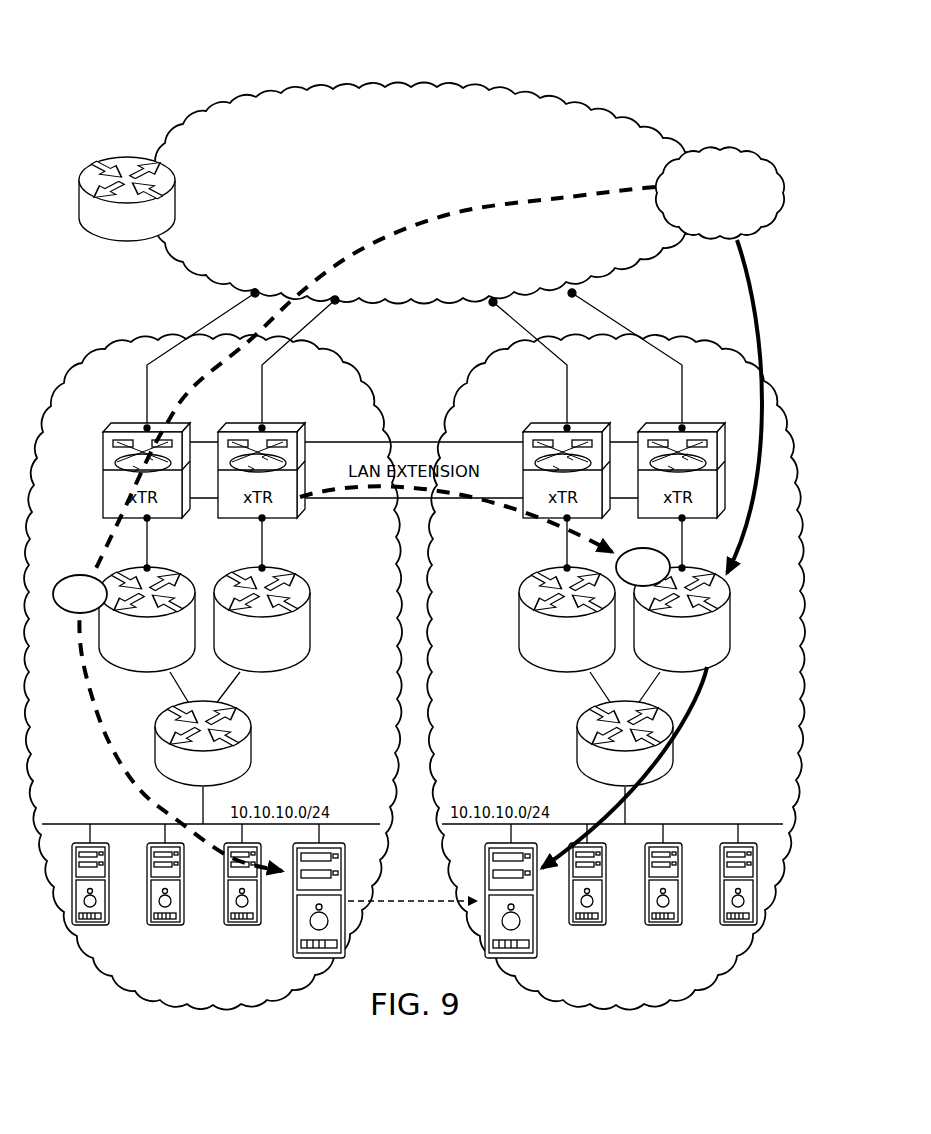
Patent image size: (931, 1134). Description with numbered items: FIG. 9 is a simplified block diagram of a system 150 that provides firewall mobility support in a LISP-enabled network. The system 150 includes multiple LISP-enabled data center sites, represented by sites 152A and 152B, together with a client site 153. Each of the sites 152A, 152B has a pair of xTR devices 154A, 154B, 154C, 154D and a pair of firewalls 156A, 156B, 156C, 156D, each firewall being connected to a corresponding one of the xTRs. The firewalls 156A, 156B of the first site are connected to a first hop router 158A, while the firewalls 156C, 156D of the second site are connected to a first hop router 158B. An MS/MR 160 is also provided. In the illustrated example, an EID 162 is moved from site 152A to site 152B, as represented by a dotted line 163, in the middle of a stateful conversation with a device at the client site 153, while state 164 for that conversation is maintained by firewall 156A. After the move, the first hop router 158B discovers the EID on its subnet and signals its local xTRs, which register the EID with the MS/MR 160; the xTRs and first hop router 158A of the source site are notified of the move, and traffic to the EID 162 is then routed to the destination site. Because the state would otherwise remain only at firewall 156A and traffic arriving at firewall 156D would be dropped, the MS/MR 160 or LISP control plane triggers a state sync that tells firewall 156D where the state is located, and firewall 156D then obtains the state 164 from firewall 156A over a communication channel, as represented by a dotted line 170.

The system 150 is at (201, 58).
The LISP-enabled data center site 152A is at (95, 356).
The LISP-enabled data center site 152B is at (694, 344).
The client site 153 is at (724, 147).
The xTR device 154A is at (120, 424).
The xTR device 154B is at (285, 424).
The xTR device 154C is at (590, 424).
The xTR device 154D is at (702, 424).
The firewall 156A is at (140, 673).
The firewall 156B is at (311, 624).
The firewall 156C is at (518, 624).
The firewall 156D is at (718, 665).
The first hop router 158A is at (252, 746).
The first hop router 158B is at (578, 747).
The MS/MR 160 is at (130, 157).
The EID 162 is at (539, 933).
The dotted line 163 is at (410, 907).
The state 164 is at (70, 578).
The dotted line 170 is at (514, 509).